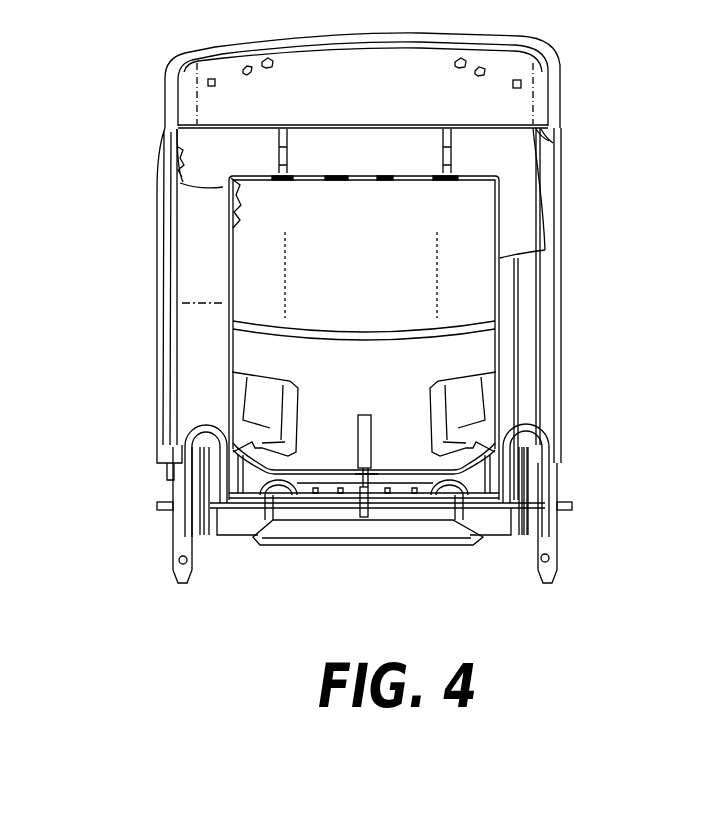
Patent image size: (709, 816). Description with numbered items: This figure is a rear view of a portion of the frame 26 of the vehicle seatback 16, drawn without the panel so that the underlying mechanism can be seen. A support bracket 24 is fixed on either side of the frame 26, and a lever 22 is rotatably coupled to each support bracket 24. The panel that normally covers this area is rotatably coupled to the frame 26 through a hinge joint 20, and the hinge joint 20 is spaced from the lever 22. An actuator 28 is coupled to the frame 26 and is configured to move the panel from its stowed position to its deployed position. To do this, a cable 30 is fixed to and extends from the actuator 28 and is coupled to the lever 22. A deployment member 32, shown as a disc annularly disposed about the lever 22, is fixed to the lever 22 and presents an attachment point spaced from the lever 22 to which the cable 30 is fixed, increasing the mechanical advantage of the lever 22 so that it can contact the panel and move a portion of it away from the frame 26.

The seatback 16 is at (543, 97).
The hinge joint 20 is at (367, 177).
The lever 22 is at (541, 437).
The support bracket 24 is at (190, 512).
The frame 26 is at (513, 358).
The actuator 28 is at (372, 418).
The cable 30 is at (368, 475).
The deployment member 32 is at (367, 505).